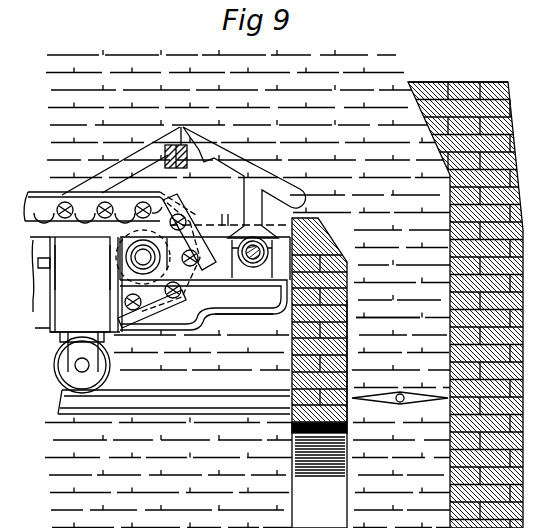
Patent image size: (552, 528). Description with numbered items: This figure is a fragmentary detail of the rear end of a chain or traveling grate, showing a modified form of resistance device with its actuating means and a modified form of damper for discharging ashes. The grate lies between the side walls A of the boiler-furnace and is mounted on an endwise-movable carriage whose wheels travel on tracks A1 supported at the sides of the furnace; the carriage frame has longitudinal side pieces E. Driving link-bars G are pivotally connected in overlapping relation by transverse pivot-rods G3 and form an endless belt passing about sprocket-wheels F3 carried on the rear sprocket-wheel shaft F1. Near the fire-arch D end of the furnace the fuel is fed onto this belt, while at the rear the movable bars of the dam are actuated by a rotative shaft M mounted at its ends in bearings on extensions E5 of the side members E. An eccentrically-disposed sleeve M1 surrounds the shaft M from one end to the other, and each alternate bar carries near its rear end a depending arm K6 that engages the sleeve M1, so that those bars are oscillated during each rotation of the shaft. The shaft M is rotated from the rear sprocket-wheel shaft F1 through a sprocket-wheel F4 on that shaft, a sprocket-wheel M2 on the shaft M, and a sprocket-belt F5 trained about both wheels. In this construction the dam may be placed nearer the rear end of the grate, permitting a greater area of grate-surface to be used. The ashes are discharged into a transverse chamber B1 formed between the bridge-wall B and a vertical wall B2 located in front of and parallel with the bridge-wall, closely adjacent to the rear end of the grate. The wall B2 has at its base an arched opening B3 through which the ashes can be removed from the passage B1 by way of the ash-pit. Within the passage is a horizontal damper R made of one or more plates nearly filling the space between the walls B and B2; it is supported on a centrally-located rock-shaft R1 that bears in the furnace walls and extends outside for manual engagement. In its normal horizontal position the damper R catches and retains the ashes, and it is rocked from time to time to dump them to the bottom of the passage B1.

The side wall A is at (247, 289).
The track A1 is at (258, 264).
The bridge-wall B is at (460, 82).
The transverse chamber B1 is at (391, 337).
The vertical wall B2 is at (348, 370).
The arched opening B3 is at (319, 373).
The fire-arch D is at (181, 128).
The side piece E is at (76, 315).
The extension E5 is at (312, 240).
The rear sprocket-wheel shaft F1 is at (148, 262).
The sprocket-wheel F3 is at (192, 226).
The sprocket-wheel F4 is at (82, 267).
The sprocket-belt F5 is at (222, 210).
The link-bar G is at (66, 192).
The transverse pivot-rod G3 is at (78, 172).
The depending arm K6 is at (256, 244).
The rotative shaft M is at (203, 305).
The eccentrically-disposed sleeve M1 is at (300, 197).
The sprocket-wheel M2 is at (244, 329).
The horizontal damper R is at (432, 404).
The rock-shaft R1 is at (397, 404).